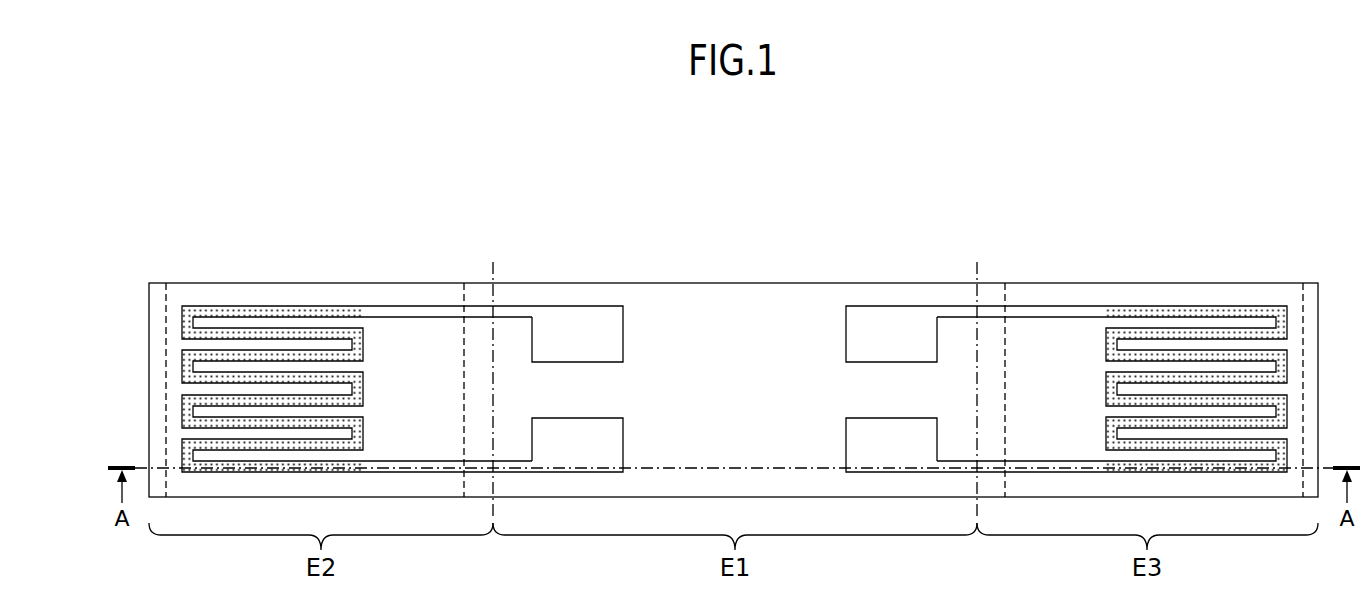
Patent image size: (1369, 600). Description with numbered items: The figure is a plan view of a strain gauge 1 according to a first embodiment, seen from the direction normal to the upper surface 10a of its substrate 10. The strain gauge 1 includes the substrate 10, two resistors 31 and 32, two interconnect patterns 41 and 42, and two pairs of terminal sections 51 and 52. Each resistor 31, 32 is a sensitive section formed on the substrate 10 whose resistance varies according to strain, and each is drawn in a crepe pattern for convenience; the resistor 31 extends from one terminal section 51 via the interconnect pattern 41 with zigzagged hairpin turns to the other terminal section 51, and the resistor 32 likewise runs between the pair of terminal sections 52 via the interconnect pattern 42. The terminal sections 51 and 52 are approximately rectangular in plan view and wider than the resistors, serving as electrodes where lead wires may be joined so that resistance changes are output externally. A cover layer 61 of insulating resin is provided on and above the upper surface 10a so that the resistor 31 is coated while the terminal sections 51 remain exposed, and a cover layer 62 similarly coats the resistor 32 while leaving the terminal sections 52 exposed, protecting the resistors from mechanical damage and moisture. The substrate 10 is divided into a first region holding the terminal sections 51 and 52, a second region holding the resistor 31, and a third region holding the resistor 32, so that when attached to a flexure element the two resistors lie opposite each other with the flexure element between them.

The strain gauge 1 is at (108, 176).
The substrate 10 is at (181, 278).
The upper surface of the substrate 10a is at (228, 296).
The resistor 31 is at (273, 305).
The resistor 32 is at (1196, 305).
The interconnect pattern 41 is at (413, 305).
The interconnect pattern 42 is at (1056, 305).
The terminal sections 51 is at (577, 335).
The terminal sections 52 is at (893, 335).
The cover layer 61 is at (465, 294).
The cover layer 62 is at (1004, 296).